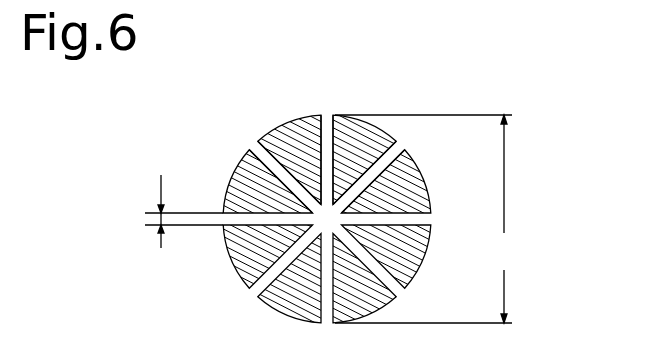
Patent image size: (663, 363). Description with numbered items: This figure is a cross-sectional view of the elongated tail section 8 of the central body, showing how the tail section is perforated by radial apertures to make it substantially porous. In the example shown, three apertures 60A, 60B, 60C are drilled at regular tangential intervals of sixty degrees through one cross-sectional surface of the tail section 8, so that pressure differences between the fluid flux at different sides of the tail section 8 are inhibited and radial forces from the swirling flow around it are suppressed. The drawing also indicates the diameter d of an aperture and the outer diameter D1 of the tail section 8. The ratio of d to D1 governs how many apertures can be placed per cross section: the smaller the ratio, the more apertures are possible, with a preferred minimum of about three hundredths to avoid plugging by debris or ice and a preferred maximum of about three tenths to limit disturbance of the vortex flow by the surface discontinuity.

The elongated tail section 8 is at (415, 197).
The aperture 60A is at (257, 145).
The aperture 60B is at (323, 114).
The aperture 60C is at (405, 152).
The diameter of the aperture d is at (158, 219).
The diameter of the tail section D1 is at (428, 219).